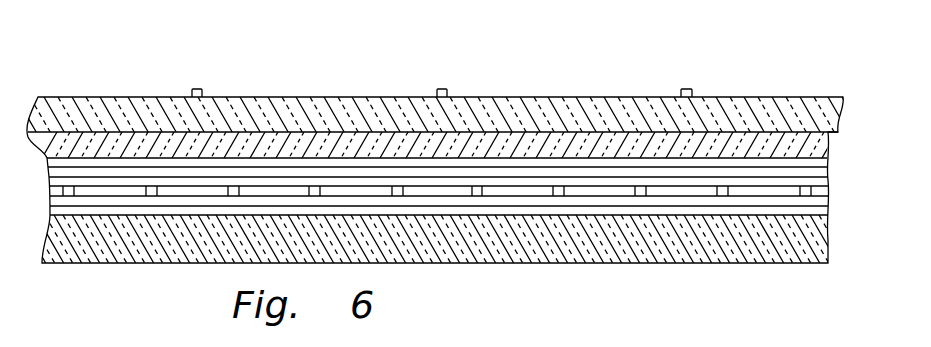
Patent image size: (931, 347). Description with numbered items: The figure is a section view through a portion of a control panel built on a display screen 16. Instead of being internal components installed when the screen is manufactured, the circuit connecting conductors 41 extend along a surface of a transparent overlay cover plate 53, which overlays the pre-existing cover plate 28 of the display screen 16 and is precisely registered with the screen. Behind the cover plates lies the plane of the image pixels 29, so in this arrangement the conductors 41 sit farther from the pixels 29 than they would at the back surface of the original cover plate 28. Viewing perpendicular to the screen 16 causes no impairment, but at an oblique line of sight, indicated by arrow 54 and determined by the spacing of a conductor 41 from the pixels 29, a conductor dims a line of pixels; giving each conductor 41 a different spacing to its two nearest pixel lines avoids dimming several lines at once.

The display screen 16 is at (115, 48).
The transparent overlay cover plate 53 is at (746, 97).
The cover plate 28 is at (542, 135).
The arrow 54 is at (402, 175).
The image pixels 29 is at (557, 195).
The circuit connecting conductors 41 is at (192, 89).